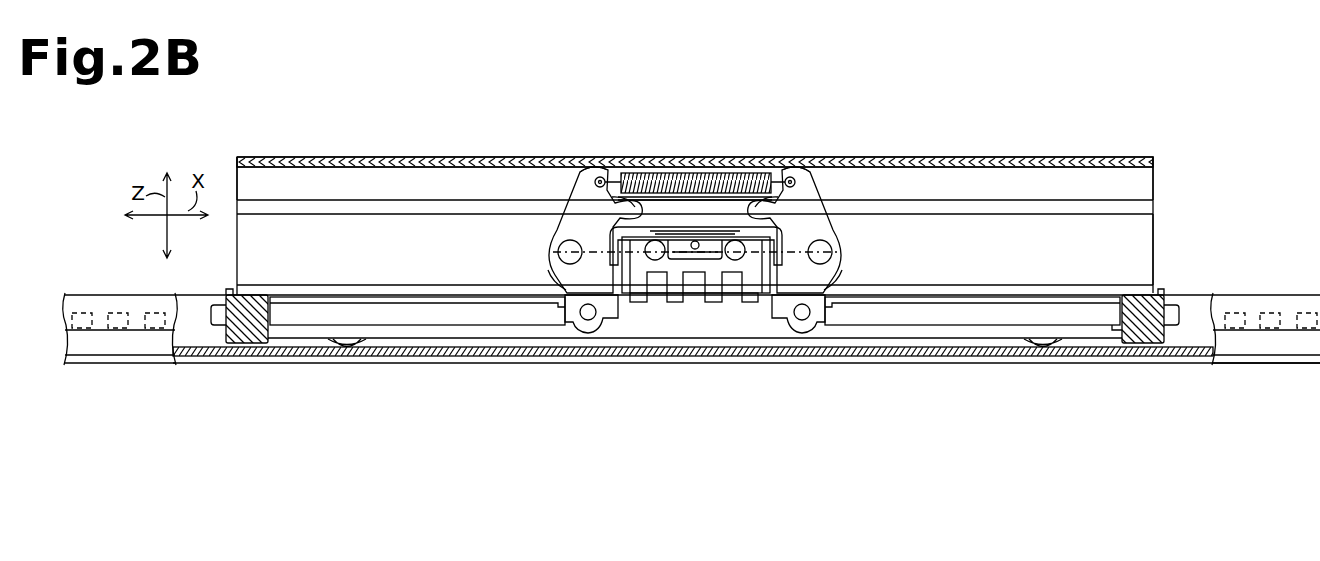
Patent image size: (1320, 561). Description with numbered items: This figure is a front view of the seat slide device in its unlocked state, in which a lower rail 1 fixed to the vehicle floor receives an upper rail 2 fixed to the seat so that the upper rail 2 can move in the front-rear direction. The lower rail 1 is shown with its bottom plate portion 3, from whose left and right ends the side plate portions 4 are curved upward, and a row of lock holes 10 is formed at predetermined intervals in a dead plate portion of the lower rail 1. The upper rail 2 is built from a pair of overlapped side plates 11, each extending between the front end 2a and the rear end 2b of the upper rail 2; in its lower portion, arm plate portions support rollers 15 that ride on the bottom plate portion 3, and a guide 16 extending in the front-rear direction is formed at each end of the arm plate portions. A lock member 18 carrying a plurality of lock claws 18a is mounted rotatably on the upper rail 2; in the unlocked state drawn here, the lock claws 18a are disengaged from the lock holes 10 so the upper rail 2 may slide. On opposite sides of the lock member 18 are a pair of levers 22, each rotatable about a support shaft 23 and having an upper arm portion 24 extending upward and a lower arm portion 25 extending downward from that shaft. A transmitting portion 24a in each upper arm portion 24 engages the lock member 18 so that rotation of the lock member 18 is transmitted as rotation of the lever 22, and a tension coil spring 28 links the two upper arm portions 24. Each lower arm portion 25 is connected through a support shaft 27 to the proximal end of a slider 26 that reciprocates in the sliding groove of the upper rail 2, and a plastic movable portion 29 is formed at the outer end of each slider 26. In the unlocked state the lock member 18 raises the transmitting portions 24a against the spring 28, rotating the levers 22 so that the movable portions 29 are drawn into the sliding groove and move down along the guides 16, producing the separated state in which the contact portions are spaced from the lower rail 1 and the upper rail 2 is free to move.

The lower rail 1 is at (1247, 366).
The upper rail 2 is at (1012, 156).
The front end 2a is at (236, 158).
The rear end 2b is at (1154, 157).
The bottom plate portion 3 is at (325, 357).
The side plate portion 4 is at (118, 345).
The lock hole 10 is at (120, 305).
The side plate 11 is at (1140, 234).
The roller 15 is at (383, 352).
The guide 16 is at (220, 310).
The lock member 18 is at (675, 303).
The lock claw 18a is at (712, 303).
The lever 22 is at (551, 238).
The support shaft 23 is at (558, 252).
The upper arm portion 24 is at (590, 169).
The transmitting portion 24a is at (594, 183).
The lower arm portion 25 is at (548, 277).
The slider 26 is at (478, 312).
The support shaft 27 is at (588, 320).
The tension coil spring 28 is at (705, 172).
The movable portion 29 is at (247, 340).